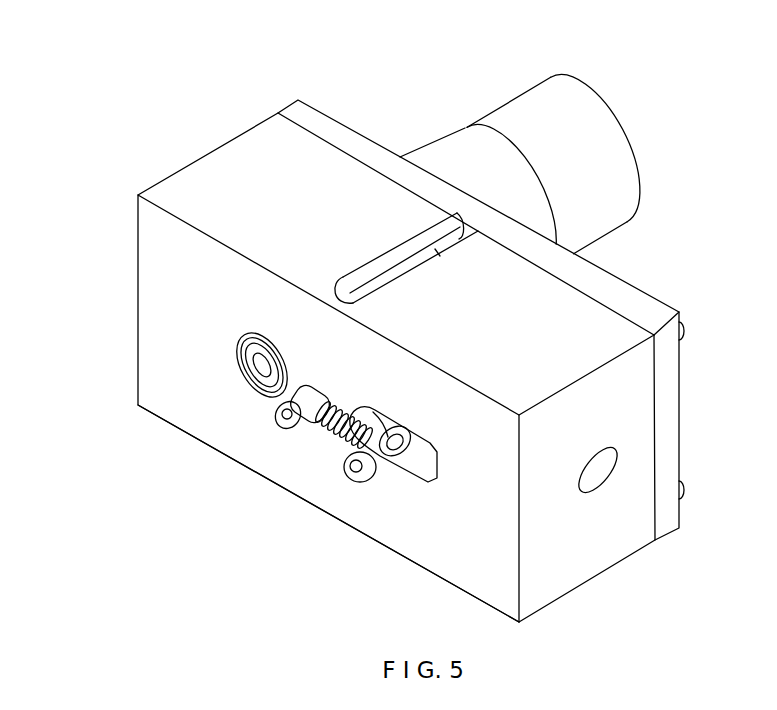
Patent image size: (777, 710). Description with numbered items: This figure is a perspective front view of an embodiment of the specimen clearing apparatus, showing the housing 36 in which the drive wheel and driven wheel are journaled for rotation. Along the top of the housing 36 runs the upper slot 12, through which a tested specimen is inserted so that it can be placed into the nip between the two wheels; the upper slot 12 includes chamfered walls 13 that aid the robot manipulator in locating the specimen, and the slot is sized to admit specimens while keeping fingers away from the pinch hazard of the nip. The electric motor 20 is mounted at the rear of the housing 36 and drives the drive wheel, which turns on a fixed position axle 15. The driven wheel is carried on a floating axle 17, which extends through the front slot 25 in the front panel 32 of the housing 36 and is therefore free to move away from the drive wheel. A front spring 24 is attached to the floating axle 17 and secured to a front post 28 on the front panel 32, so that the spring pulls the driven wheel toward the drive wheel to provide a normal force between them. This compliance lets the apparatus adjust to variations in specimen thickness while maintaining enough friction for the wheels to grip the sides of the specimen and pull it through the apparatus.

The upper slot 12 is at (350, 272).
The chamfered walls 13 is at (397, 253).
The fixed position axle 15 is at (240, 373).
The floating axle 17 is at (370, 472).
The electric motor 20 is at (613, 146).
The front spring 24 is at (333, 447).
The front slot 25 is at (435, 455).
The front post 28 is at (290, 430).
The front panel 32 is at (203, 423).
The housing 36 is at (137, 287).